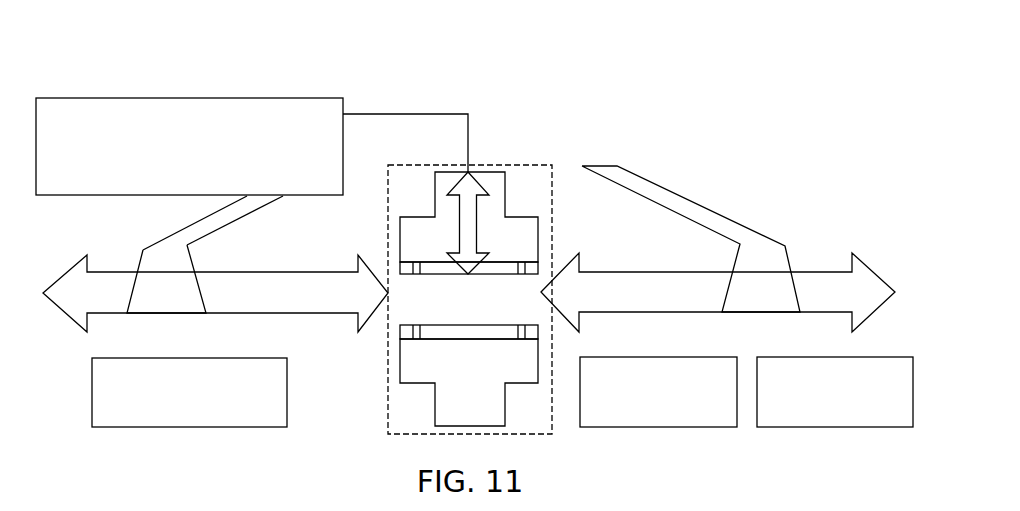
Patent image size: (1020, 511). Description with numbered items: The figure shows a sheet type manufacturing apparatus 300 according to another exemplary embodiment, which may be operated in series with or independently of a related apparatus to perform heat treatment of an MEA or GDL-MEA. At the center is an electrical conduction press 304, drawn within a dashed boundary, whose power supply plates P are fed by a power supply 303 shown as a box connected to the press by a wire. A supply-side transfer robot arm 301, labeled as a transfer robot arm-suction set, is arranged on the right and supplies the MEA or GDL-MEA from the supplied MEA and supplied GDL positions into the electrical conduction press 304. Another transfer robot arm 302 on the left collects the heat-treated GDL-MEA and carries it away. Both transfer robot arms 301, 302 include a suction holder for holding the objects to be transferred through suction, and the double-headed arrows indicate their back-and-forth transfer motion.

The GDL-MEA assembly transfer apparatus 300 is at (571, 137).
The supply-side transfer robot arm 301 is at (632, 168).
The transfer robot arm 302 is at (158, 241).
The power supply 303 is at (225, 97).
The electrical conduction press 304 is at (485, 266).
The power supply plate P is at (498, 325).